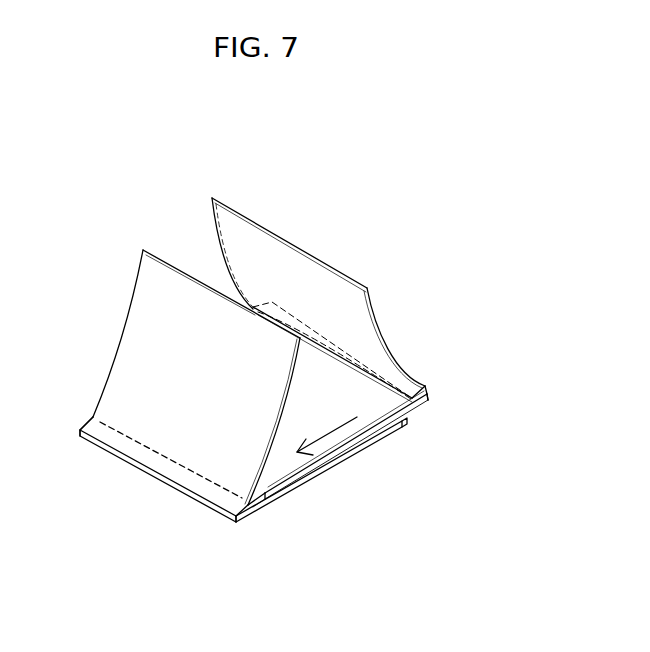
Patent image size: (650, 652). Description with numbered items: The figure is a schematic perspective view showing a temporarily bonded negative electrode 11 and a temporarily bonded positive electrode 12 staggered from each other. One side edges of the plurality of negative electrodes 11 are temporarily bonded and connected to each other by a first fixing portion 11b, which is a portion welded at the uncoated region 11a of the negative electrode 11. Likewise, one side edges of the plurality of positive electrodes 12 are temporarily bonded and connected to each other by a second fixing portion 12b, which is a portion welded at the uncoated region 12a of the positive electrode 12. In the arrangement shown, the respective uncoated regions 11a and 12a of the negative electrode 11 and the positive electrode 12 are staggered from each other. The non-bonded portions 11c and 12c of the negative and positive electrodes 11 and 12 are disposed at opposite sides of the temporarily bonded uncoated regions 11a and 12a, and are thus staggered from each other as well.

The negative electrode 11 is at (227, 433).
The uncoated region of the negative electrode 11a is at (243, 523).
The first fixing portion 11b is at (138, 452).
The non-bonded portion of the negative electrode 11c is at (400, 426).
The positive electrode 12 is at (378, 322).
The uncoated region of the positive electrode 12a is at (427, 402).
The second fixing portion 12b is at (413, 386).
The non-bonded portion of the positive electrode 12c is at (267, 503).